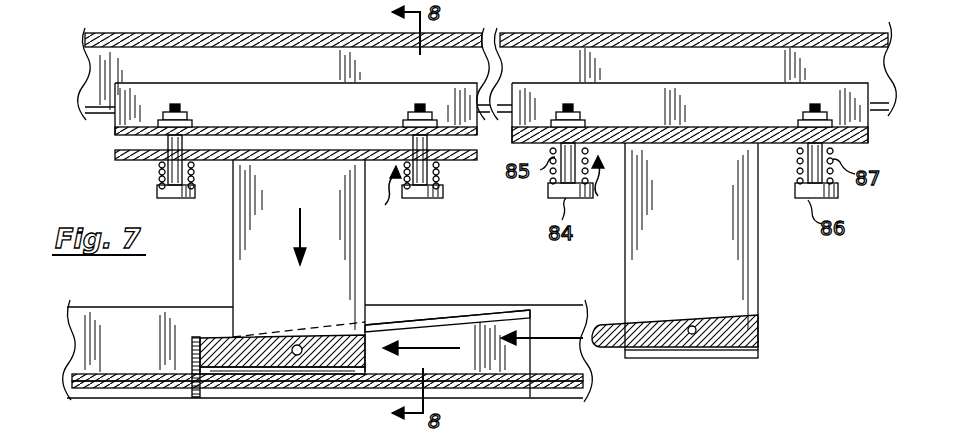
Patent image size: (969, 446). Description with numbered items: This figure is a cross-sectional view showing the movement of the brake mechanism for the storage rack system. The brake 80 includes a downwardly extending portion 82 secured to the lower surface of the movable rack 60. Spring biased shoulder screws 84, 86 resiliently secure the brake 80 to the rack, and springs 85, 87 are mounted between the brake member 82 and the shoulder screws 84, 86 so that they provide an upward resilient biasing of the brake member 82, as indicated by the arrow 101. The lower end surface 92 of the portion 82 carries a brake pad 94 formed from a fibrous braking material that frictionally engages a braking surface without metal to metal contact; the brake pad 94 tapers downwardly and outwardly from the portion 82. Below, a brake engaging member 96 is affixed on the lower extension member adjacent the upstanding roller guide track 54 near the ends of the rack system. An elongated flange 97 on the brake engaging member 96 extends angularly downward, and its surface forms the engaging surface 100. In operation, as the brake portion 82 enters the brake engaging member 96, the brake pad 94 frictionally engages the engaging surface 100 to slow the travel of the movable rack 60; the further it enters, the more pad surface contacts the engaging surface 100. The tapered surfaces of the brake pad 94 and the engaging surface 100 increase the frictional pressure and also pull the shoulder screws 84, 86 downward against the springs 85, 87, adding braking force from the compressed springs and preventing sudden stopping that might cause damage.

The movable rack 60 is at (148, 33).
The downwardly extending portion 82 is at (365, 262).
The spring biased shoulder screw 84 is at (157, 193).
The spring 85 is at (194, 177).
The spring biased shoulder screw 86 is at (435, 198).
The spring 87 is at (440, 169).
The arrow 101 is at (494, 194).
The roller guide track 54 is at (154, 306).
The brake 80 is at (406, 286).
The brake engaging member 96 is at (464, 302).
The elongated flange 97 is at (410, 318).
The brake pad 94 is at (250, 370).
The lower end surface 92 is at (307, 374).
The engaging surface 100 is at (463, 326).